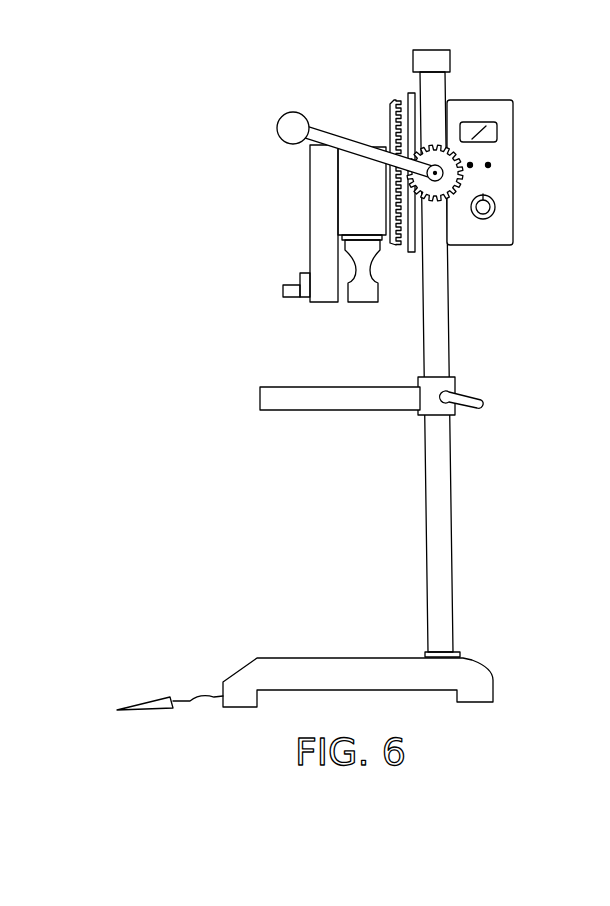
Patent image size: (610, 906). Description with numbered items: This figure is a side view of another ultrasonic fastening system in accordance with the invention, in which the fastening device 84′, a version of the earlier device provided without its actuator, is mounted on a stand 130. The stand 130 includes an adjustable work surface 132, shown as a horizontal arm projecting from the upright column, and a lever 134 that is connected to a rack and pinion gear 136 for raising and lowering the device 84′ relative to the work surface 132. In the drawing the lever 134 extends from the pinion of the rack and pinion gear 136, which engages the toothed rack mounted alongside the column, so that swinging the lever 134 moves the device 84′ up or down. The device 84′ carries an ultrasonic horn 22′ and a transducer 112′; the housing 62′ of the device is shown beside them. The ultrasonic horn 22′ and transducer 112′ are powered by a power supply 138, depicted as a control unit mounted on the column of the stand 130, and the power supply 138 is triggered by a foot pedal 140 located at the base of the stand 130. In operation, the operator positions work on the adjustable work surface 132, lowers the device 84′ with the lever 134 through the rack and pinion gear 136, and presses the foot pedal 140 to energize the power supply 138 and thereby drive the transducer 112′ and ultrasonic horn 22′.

The stand 130 is at (453, 482).
The power supply 138 is at (513, 172).
The transducer 112′ is at (405, 103).
The housing 62′ is at (310, 246).
The ultrasonic horn 22′ is at (362, 302).
The device 84′ is at (250, 169).
The rack and pinion gear 136 is at (432, 199).
The lever 134 is at (326, 131).
The adjustable work surface 132 is at (320, 386).
The foot pedal 140 is at (158, 697).